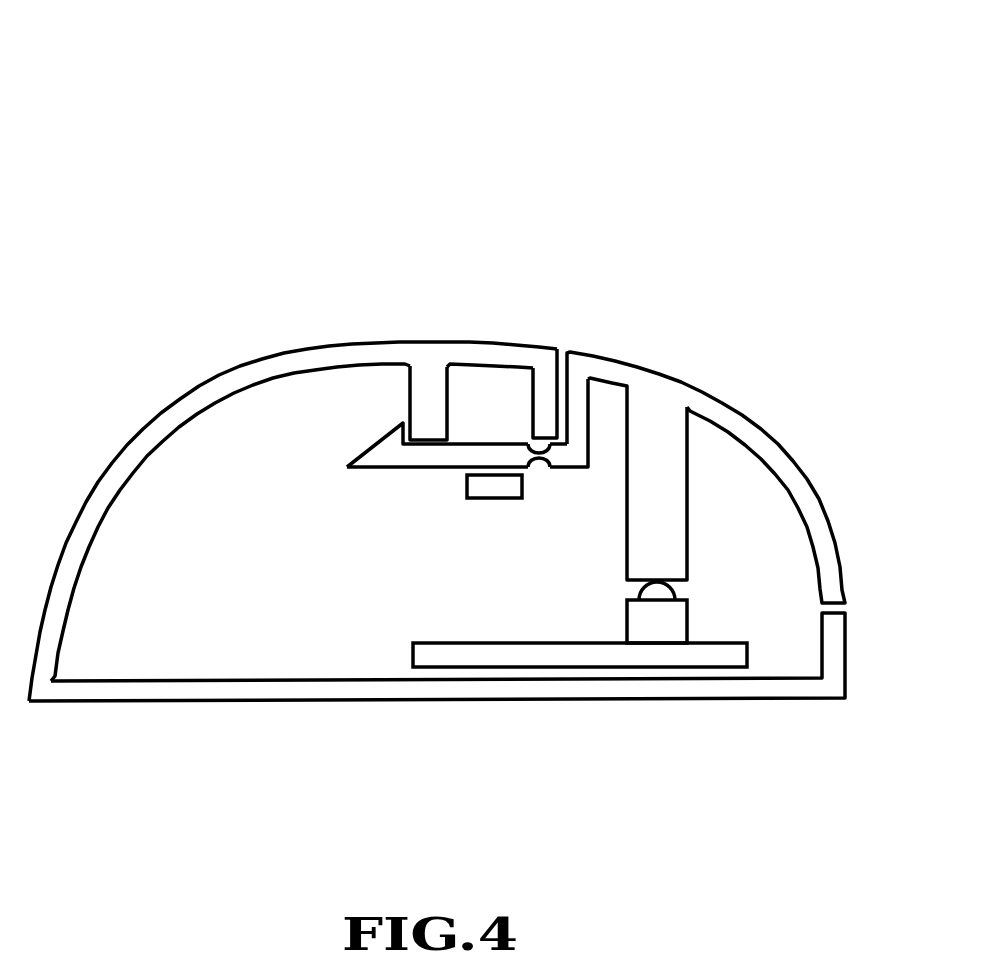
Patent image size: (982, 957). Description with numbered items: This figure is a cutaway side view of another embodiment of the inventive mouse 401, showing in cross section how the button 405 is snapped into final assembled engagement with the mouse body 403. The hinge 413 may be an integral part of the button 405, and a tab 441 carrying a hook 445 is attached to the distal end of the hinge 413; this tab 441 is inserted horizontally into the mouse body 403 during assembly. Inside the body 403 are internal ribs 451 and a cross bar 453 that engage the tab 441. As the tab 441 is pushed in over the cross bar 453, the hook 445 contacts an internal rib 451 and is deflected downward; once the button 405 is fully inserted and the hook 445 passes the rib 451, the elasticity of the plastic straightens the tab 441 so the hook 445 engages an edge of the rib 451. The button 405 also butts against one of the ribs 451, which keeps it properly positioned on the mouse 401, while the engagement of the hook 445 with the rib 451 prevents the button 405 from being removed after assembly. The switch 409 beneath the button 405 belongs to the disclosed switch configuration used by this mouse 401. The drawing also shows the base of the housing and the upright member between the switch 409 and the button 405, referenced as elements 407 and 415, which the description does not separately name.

The mouse 401 is at (220, 84).
The mouse body 403 is at (177, 398).
The button 405 is at (805, 468).
The housing base 407 is at (253, 702).
The switch 409 is at (633, 625).
The hinge 413 is at (542, 472).
The light guide column 415 is at (680, 537).
The tab 441 is at (427, 469).
The hook 445 is at (377, 443).
The internal ribs 451 is at (428, 400).
The cross bar 453 is at (493, 500).